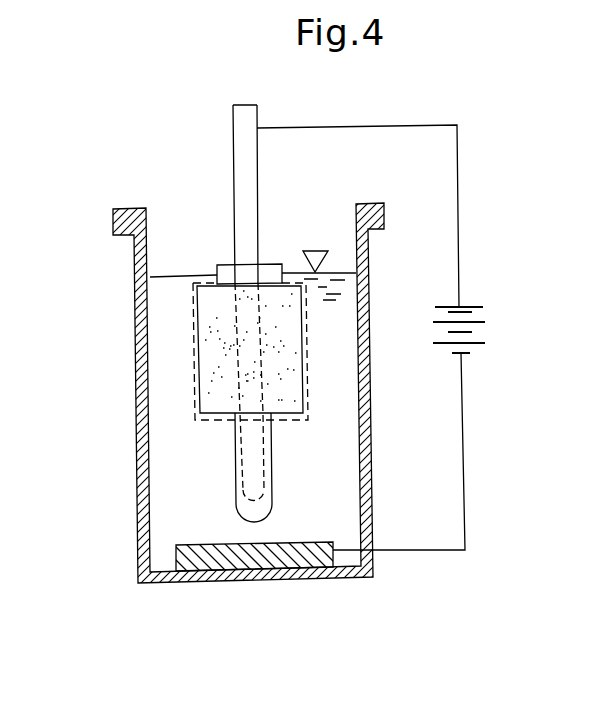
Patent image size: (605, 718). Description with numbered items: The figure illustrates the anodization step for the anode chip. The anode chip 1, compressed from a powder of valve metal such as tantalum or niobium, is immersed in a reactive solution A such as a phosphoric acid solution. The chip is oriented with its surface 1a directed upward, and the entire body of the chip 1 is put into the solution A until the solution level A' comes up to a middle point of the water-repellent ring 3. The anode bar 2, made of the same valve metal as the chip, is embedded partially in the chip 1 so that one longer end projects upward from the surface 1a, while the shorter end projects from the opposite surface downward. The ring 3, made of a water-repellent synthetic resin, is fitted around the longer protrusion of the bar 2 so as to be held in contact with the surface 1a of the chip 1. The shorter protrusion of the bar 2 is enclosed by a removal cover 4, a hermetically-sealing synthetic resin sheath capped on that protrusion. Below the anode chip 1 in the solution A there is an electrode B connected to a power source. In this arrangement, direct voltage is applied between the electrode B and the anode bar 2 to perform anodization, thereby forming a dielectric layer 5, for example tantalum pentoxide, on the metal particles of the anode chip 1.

The anode chip 1 is at (212, 357).
The surface of the chip 1a is at (214, 280).
The anode bar 2 is at (257, 113).
The ring 3 is at (223, 265).
The removal cover 4 is at (236, 517).
The dielectric layer 5 is at (192, 333).
The reactive solution A is at (203, 367).
The solution level A' is at (231, 206).
The electrode B is at (213, 565).